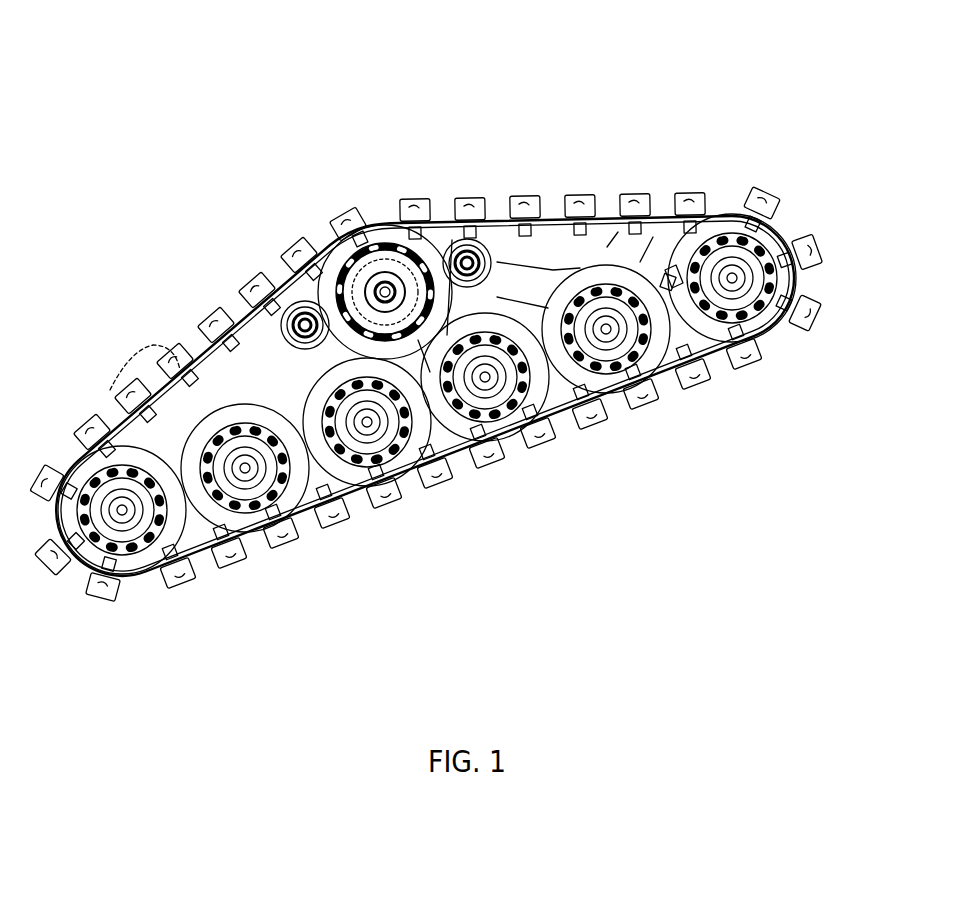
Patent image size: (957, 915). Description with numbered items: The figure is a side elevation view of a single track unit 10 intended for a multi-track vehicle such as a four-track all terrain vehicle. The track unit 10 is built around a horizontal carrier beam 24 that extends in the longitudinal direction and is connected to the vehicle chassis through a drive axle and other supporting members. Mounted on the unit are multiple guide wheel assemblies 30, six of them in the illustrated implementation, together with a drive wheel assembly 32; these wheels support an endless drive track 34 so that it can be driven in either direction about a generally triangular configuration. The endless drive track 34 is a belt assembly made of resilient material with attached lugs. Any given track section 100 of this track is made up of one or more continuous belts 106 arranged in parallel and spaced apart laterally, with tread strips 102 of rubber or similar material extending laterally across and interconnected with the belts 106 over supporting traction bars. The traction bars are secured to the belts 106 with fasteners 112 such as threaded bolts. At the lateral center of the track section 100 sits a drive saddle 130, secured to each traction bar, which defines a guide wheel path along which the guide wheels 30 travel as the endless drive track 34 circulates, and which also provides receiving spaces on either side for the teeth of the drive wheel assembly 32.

The track unit 10 is at (712, 112).
The horizontal carrier beam 24 is at (195, 410).
The guide wheel assemblies 30 is at (140, 563).
The drive wheel assembly 32 is at (370, 214).
The endless drive track 34 is at (207, 558).
The track section 100 is at (133, 353).
The tread strips 102 is at (418, 212).
The continuous belts 106 is at (547, 232).
The fasteners 112 is at (666, 283).
The drive saddle 130 is at (600, 232).